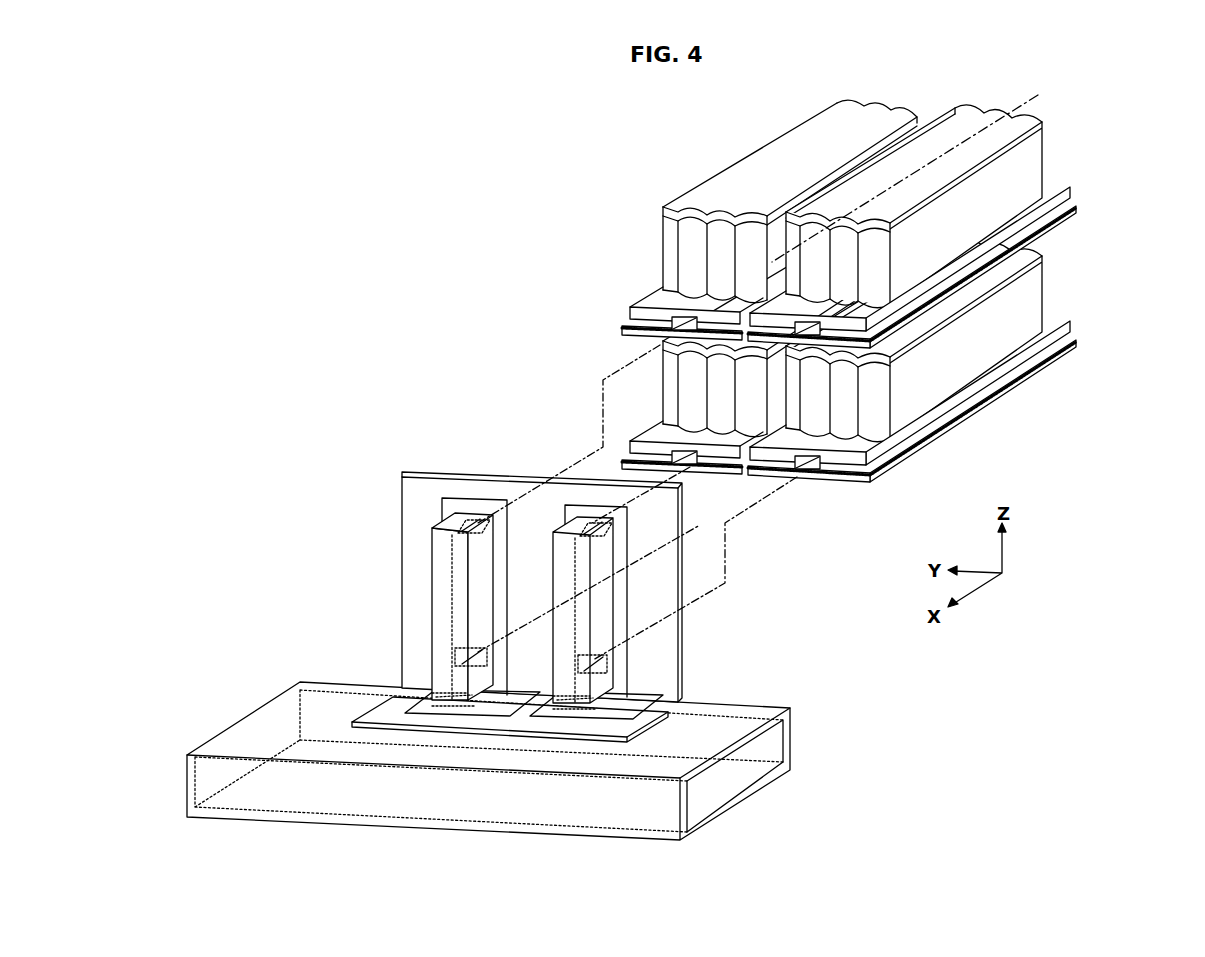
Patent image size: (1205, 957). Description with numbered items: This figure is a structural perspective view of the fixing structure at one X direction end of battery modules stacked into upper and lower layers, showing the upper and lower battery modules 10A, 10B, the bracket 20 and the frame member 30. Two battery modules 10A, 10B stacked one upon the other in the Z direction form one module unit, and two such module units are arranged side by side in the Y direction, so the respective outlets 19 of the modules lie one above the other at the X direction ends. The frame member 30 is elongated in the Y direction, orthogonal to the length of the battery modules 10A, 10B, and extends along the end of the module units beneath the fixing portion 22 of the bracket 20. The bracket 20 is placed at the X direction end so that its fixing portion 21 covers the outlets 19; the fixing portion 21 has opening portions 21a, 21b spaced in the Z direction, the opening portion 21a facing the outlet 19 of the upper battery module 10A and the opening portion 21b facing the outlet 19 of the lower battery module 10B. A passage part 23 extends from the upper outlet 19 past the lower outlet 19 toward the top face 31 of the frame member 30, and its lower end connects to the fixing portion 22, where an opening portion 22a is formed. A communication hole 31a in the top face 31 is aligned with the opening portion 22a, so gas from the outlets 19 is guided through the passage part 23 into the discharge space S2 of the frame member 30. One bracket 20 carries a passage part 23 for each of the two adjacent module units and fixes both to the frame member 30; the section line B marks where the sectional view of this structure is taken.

The upper battery module 10A is at (1043, 159).
The lower battery module 10B is at (1043, 280).
The outlet 19 is at (672, 322).
The bracket 20 is at (424, 472).
The fixing portion 21 is at (531, 694).
The opening portion 21a is at (450, 530).
The opening portion 21b is at (460, 656).
The fixing portion 22 is at (488, 730).
The opening portion 22a is at (443, 703).
The passage part 23 is at (432, 599).
The frame member 30 is at (497, 747).
The top face 31 is at (687, 722).
The communication hole 31a is at (453, 703).
The discharge space S2 is at (723, 783).
The B-B section line B is at (909, 175).